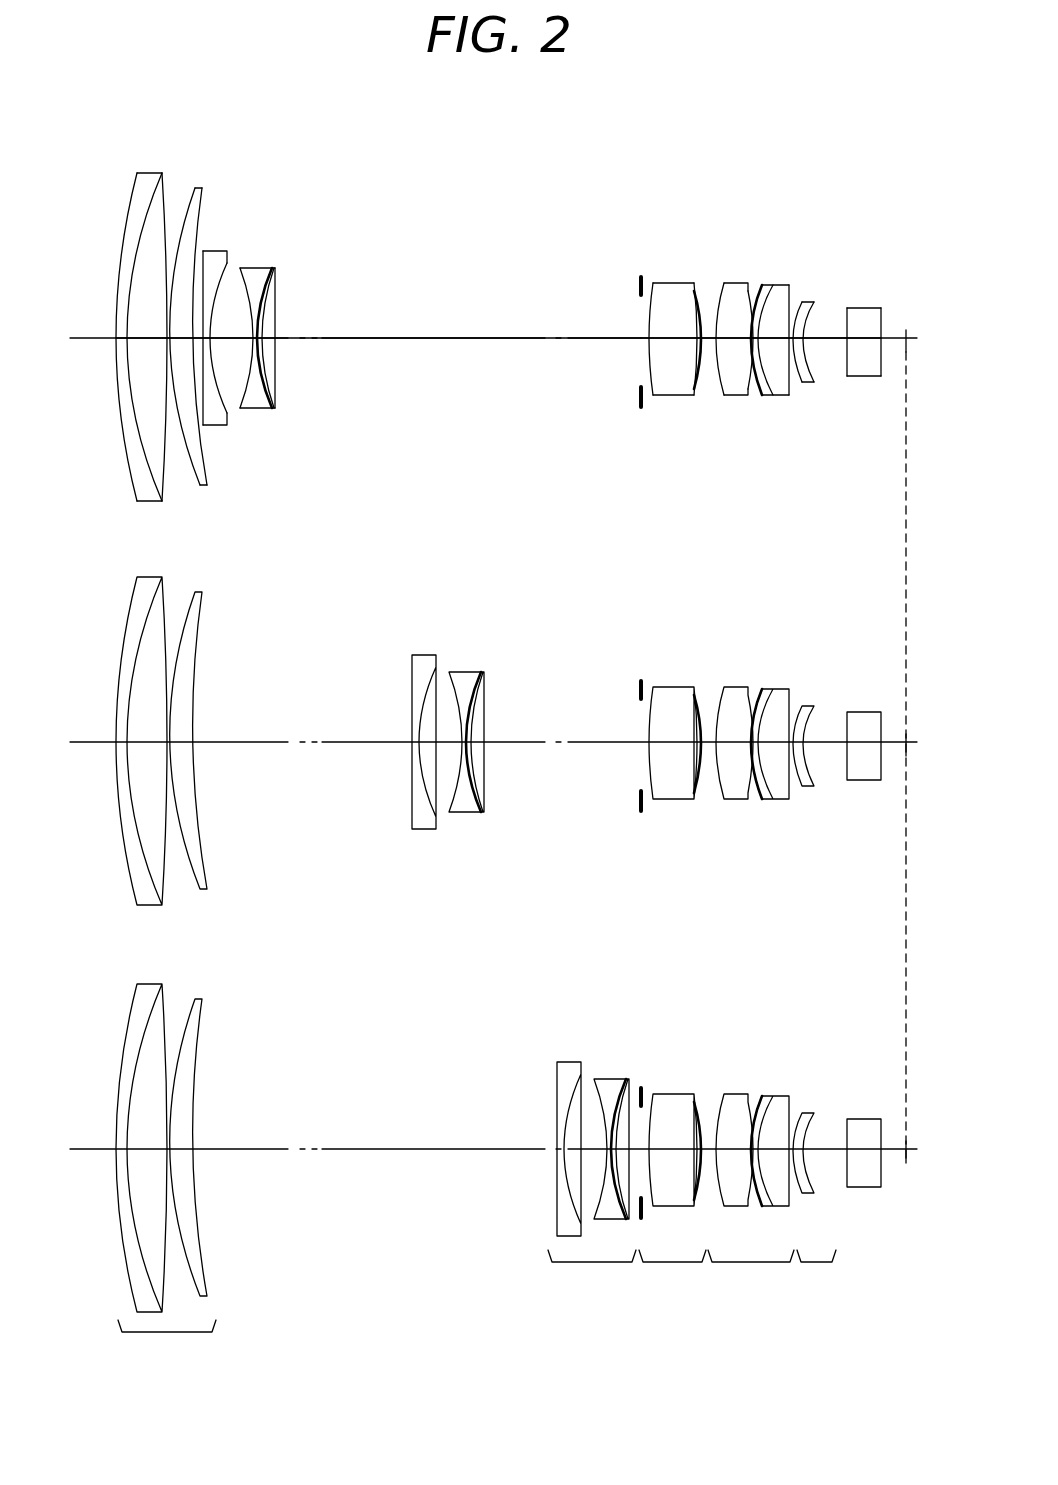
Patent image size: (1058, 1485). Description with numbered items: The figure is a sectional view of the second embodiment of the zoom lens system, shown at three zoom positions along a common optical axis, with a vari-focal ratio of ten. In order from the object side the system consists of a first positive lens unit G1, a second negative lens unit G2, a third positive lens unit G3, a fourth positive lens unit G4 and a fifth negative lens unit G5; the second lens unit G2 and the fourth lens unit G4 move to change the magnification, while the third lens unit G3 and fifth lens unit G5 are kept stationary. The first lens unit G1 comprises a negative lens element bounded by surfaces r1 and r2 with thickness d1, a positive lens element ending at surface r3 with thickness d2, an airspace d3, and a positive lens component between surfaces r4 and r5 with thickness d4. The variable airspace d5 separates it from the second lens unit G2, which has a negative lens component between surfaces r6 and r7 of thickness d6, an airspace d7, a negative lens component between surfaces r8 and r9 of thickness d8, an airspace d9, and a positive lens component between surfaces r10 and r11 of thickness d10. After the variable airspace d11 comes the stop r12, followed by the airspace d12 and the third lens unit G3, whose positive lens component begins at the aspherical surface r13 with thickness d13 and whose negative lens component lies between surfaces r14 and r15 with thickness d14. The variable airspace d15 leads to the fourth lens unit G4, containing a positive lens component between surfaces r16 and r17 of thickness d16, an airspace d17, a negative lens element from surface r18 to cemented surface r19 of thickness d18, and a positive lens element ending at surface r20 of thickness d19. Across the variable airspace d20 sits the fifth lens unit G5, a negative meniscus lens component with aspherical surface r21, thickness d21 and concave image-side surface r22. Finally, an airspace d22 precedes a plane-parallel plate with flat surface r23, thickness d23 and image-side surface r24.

The radius of curvature of first lens surface r1 is at (131, 193).
The radius of curvature of second lens surface r2 is at (140, 178).
The radius of curvature of third lens surface r3 is at (168, 195).
The radius of curvature of fourth lens surface r4 is at (180, 222).
The radius of curvature of fifth lens surface r5 is at (207, 210).
The radius of curvature of sixth lens surface r6 is at (220, 250).
The radius of curvature of seventh lens surface r7 is at (233, 250).
The radius of curvature of eighth lens surface r8 is at (252, 268).
The radius of curvature of ninth lens surface r9 is at (267, 268).
The radius of curvature of tenth lens surface r10 is at (275, 268).
The radius of curvature of eleventh lens surface r11 is at (280, 270).
The aperture stop r12 is at (623, 282).
The radius of curvature of thirteenth lens surface r13 is at (647, 282).
The radius of curvature of fourteenth lens surface r14 is at (668, 282).
The radius of curvature of fifteenth lens surface r15 is at (705, 282).
The radius of curvature of sixteenth lens surface r16 is at (718, 282).
The radius of curvature of seventeenth lens surface r17 is at (743, 282).
The radius of curvature of eighteenth lens surface r18 is at (758, 284).
The radius of curvature of nineteenth lens surface r19 is at (775, 284).
The radius of curvature of twentieth lens surface r20 is at (796, 284).
The radius of curvature of twenty-first lens surface r21 is at (800, 283).
The radius of curvature of twenty-second lens surface r22 is at (830, 284).
The radius of curvature of twenty-third lens surface r23 is at (850, 302).
The radius of curvature of twenty-fourth lens surface r24 is at (882, 302).
The thickness of first lens element d1 is at (122, 338).
The thickness of second lens element d2 is at (138, 334).
The airspace between second and third lens components d3 is at (167, 340).
The thickness of third lens component d4 is at (172, 383).
The variable airspace D1 d5 is at (193, 340).
The thickness of fourth lens component d6 is at (213, 342).
The airspace between fourth and fifth lens components d7 is at (233, 342).
The thickness of fifth lens component d8 is at (257, 345).
The airspace between fifth and sixth lens components d9 is at (273, 334).
The thickness of sixth lens component d10 is at (273, 341).
The variable airspace D2 d11 is at (393, 340).
The airspace behind stop d12 is at (648, 340).
The thickness of seventh lens component d13 is at (660, 396).
The thickness of eighth lens component d14 is at (692, 396).
The variable airspace D3 d15 is at (708, 394).
The thickness of ninth lens component d16 is at (733, 396).
The airspace between ninth and tenth lens components d17 is at (753, 396).
The thickness of tenth lens element d18 is at (770, 396).
The thickness of eleventh lens element d19 is at (793, 397).
The variable airspace D4 d20 is at (797, 378).
The thickness of twelfth lens component d21 is at (805, 373).
The airspace between fifth lens unit and plate d22 is at (835, 342).
The thickness of plate d23 is at (867, 342).
The first positive lens unit G1 is at (167, 1343).
The second negative lens unit G2 is at (592, 1277).
The third positive lens unit G3 is at (672, 1277).
The fourth positive lens unit G4 is at (751, 1277).
The fifth negative lens unit G5 is at (815, 1277).